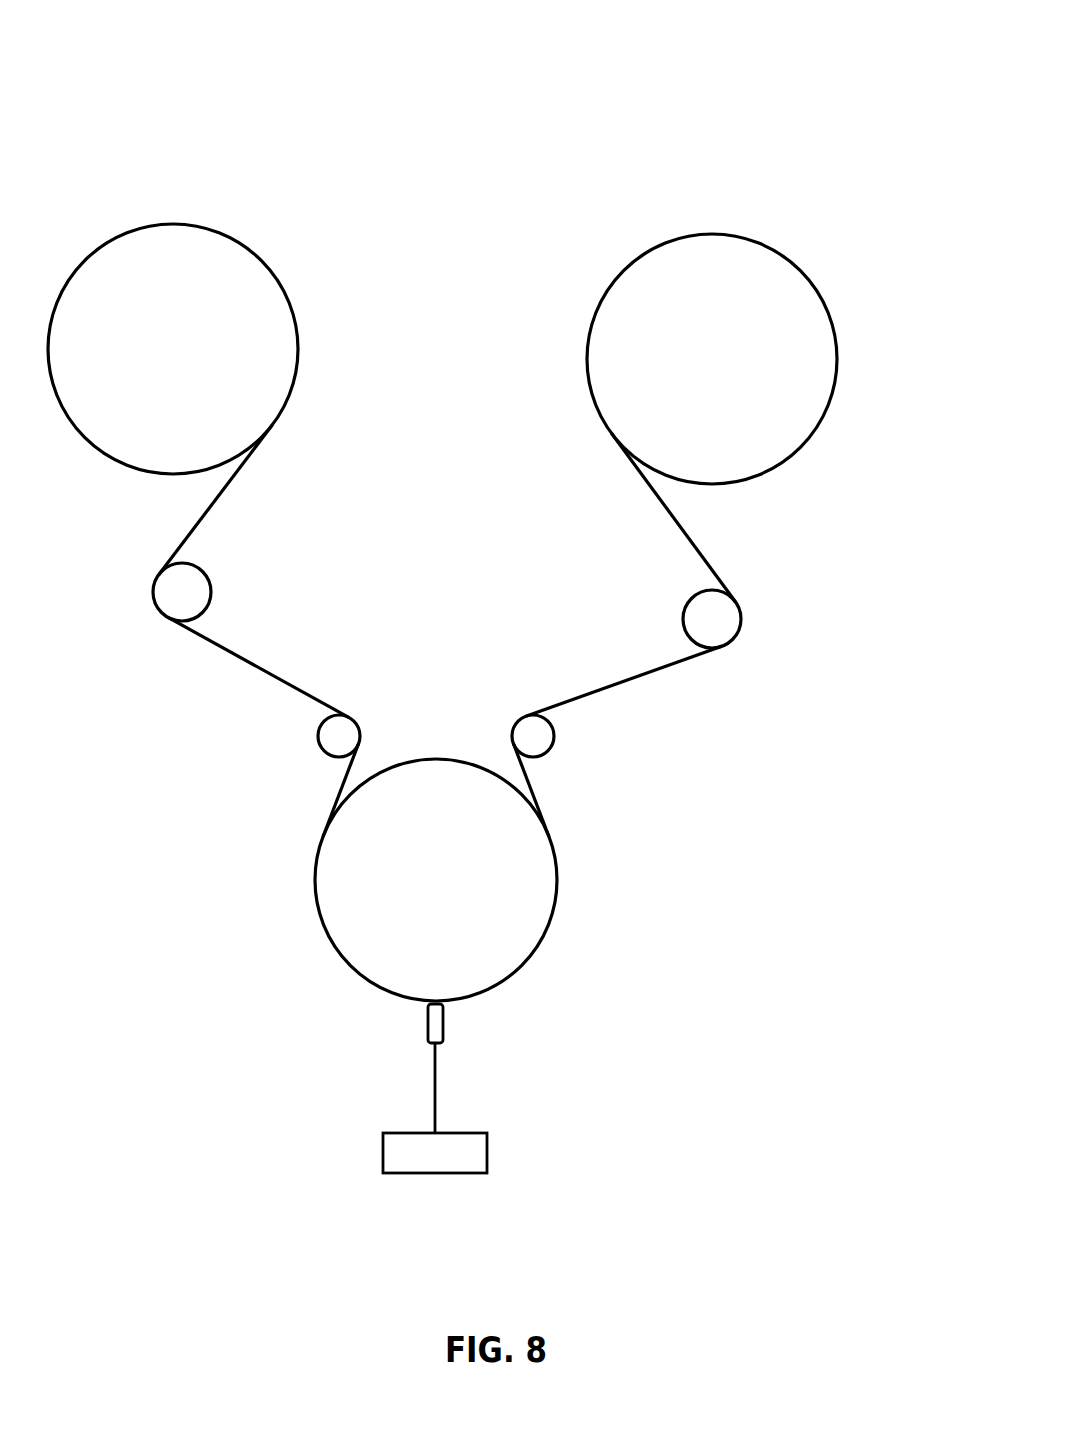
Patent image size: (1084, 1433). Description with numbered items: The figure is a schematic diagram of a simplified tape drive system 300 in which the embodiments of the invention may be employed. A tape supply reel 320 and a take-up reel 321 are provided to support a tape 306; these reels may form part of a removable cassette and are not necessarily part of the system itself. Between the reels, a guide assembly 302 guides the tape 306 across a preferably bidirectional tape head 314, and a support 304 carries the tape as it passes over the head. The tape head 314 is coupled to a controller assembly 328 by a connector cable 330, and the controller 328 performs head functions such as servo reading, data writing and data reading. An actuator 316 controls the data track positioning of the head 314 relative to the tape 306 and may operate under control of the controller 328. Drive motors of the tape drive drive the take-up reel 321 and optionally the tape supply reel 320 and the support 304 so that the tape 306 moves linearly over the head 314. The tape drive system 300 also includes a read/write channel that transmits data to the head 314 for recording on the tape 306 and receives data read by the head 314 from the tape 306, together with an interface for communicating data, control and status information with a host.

The tape drive system 300 is at (222, 149).
The guide assembly 302 is at (614, 850).
The support 304 is at (335, 846).
The tape 306 is at (270, 675).
The tape head 314 is at (410, 1010).
The actuator 316 is at (443, 1025).
The tape supply reel 320 is at (287, 293).
The take-up reel 321 is at (710, 232).
The controller assembly 328 is at (487, 1152).
The connector cable 330 is at (430, 1105).